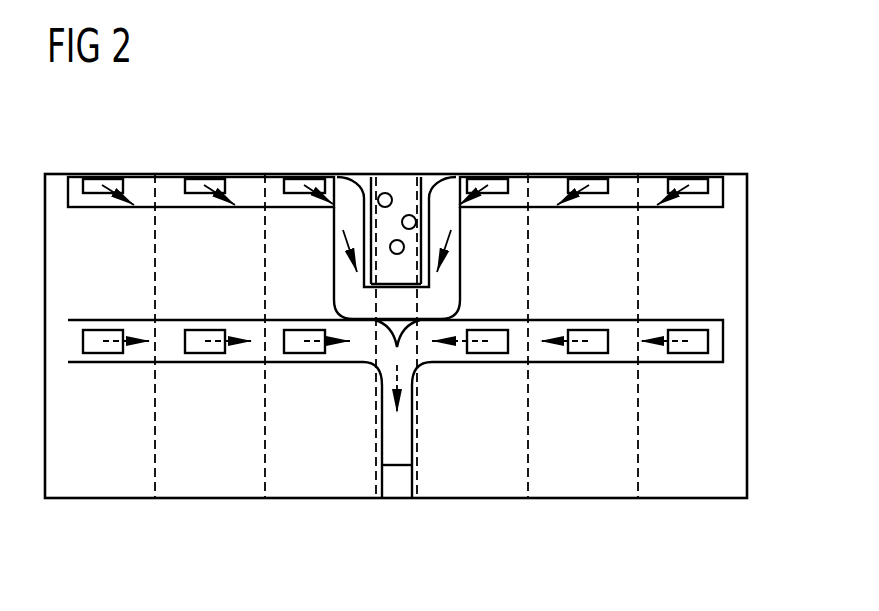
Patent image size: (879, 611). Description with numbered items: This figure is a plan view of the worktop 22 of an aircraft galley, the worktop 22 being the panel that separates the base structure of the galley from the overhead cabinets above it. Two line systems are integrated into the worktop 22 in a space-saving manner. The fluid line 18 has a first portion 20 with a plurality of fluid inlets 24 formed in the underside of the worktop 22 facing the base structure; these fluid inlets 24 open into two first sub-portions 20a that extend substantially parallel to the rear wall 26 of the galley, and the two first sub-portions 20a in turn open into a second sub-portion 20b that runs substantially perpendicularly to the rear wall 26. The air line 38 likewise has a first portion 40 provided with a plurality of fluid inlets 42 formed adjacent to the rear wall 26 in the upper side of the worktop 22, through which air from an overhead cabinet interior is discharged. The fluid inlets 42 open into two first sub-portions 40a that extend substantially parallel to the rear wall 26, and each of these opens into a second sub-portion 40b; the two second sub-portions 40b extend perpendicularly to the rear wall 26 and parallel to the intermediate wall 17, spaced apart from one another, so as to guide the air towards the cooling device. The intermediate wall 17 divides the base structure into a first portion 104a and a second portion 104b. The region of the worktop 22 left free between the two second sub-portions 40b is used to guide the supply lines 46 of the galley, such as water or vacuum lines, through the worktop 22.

The intermediate wall 17 is at (397, 490).
The fluid line 18 is at (727, 335).
The first portion of the fluid line 20 is at (433, 381).
The first sub-portions of the first portion of the fluid line 20a is at (77, 328).
The second sub-portion of the first portion of the fluid line 20b is at (415, 427).
The worktop 22 is at (744, 273).
The fluid inlets 24 is at (300, 328).
The rear wall 26 is at (434, 172).
The air line 38 is at (727, 189).
The first portion of the air line 40 is at (432, 218).
The first sub-portions of the first portion of the air line 40a is at (247, 182).
The second sub-portions of the first portion of the air line 40b is at (333, 264).
The fluid inlets 42 is at (204, 177).
The supply lines 46 is at (397, 180).
The first portion of the base structure 104a is at (215, 490).
The second portion of the base structure 104b is at (583, 490).